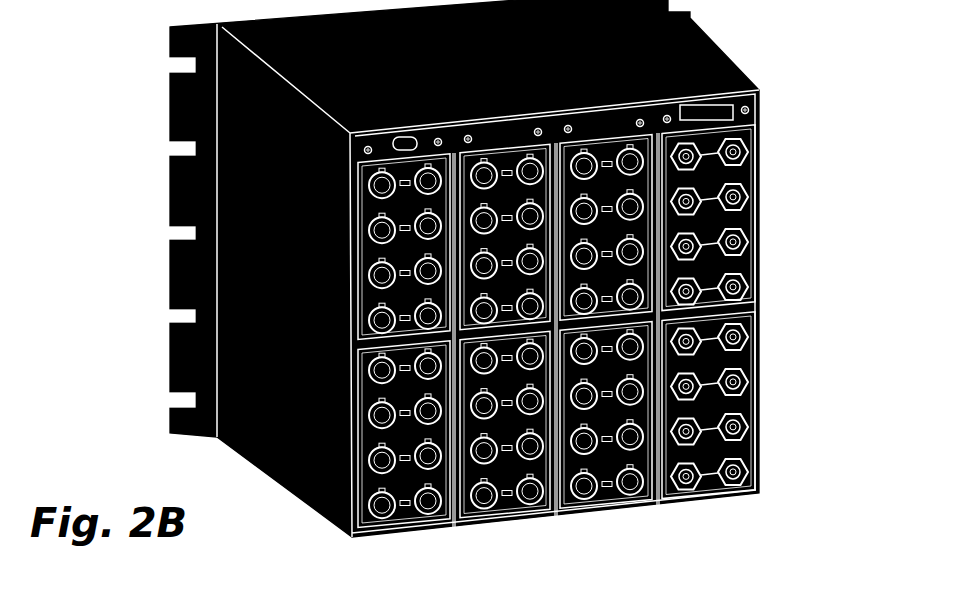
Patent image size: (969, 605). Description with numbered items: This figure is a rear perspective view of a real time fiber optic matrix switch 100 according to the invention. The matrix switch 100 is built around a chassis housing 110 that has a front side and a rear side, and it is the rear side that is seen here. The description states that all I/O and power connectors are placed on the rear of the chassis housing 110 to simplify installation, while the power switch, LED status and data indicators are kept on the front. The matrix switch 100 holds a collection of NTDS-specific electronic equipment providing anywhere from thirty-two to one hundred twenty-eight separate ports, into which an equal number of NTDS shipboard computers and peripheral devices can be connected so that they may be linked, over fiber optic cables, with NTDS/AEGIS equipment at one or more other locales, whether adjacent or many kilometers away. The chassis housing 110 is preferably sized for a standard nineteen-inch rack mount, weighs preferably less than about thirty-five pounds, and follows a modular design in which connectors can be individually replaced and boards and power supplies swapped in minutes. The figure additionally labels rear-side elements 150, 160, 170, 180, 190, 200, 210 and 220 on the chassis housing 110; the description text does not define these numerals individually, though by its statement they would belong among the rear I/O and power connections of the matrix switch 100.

The matrix switch 100 is at (762, 17).
The chassis housing 110 is at (737, 72).
The NTDS Type D interface panel 150 is at (740, 178).
The NTDS Type A interface panel 160 is at (384, 160).
The NTDS Type B interface panel 170 is at (508, 150).
The NTDS Type B interface panel 180 is at (606, 140).
The NTDS Type E interface panel 190 is at (740, 363).
The NTDS Type C interface panel 200 is at (398, 510).
The NTDS Type H interface panel 210 is at (500, 504).
The NTDS Type H interface panel 220 is at (598, 491).